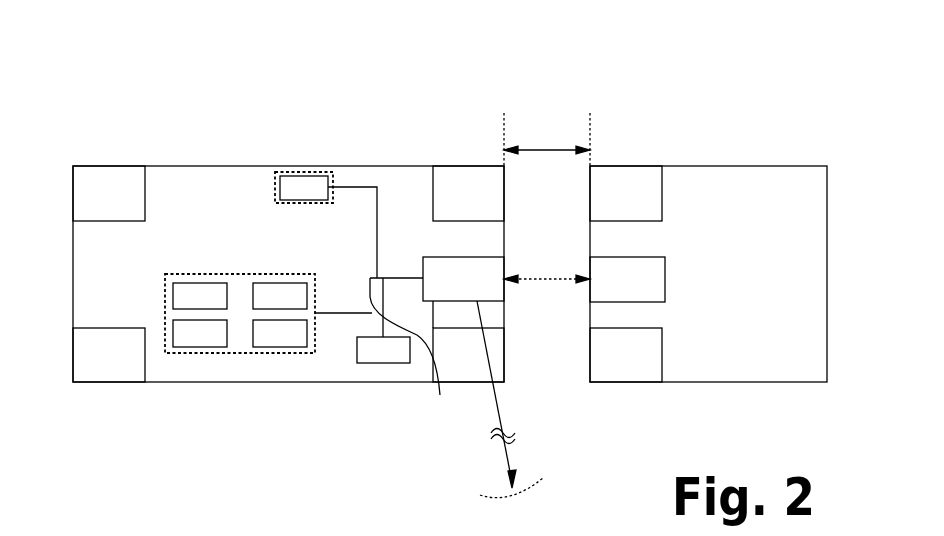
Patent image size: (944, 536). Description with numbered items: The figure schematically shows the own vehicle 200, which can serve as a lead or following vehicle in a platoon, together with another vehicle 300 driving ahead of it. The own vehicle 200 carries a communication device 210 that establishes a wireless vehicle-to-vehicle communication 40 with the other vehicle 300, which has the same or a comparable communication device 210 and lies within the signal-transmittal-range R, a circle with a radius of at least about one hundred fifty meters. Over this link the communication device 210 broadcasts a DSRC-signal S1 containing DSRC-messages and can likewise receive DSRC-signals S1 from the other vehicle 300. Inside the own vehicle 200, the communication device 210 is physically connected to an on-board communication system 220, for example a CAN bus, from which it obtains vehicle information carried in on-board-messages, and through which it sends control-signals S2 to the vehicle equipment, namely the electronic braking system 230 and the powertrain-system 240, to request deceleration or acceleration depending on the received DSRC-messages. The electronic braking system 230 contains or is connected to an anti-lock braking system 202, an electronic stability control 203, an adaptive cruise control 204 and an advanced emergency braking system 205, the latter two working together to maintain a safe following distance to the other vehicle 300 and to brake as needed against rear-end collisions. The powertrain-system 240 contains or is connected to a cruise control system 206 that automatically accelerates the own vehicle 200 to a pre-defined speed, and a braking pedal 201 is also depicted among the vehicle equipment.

The own vehicle 200 is at (290, 172).
The cruise control system 206 is at (278, 188).
The powertrain-system 240 is at (305, 172).
The electronic braking system 230 is at (240, 353).
The anti-lock braking system 202 is at (198, 283).
The electronic stability control 203 is at (280, 283).
The adaptive cruise control 204 is at (280, 347).
The advanced emergency braking system 205 is at (200, 347).
The braking pedal 201 is at (383, 363).
The on-board communication system 220 is at (420, 360).
The communication device 210 is at (490, 297).
The other vehicle 300 is at (708, 166).
The wireless vehicle-to-vehicle communication 40 is at (548, 279).
The control-signals S2 is at (377, 187).
The DSRC-signal S1 is at (547, 292).
The signal-transmittal-range R is at (507, 465).